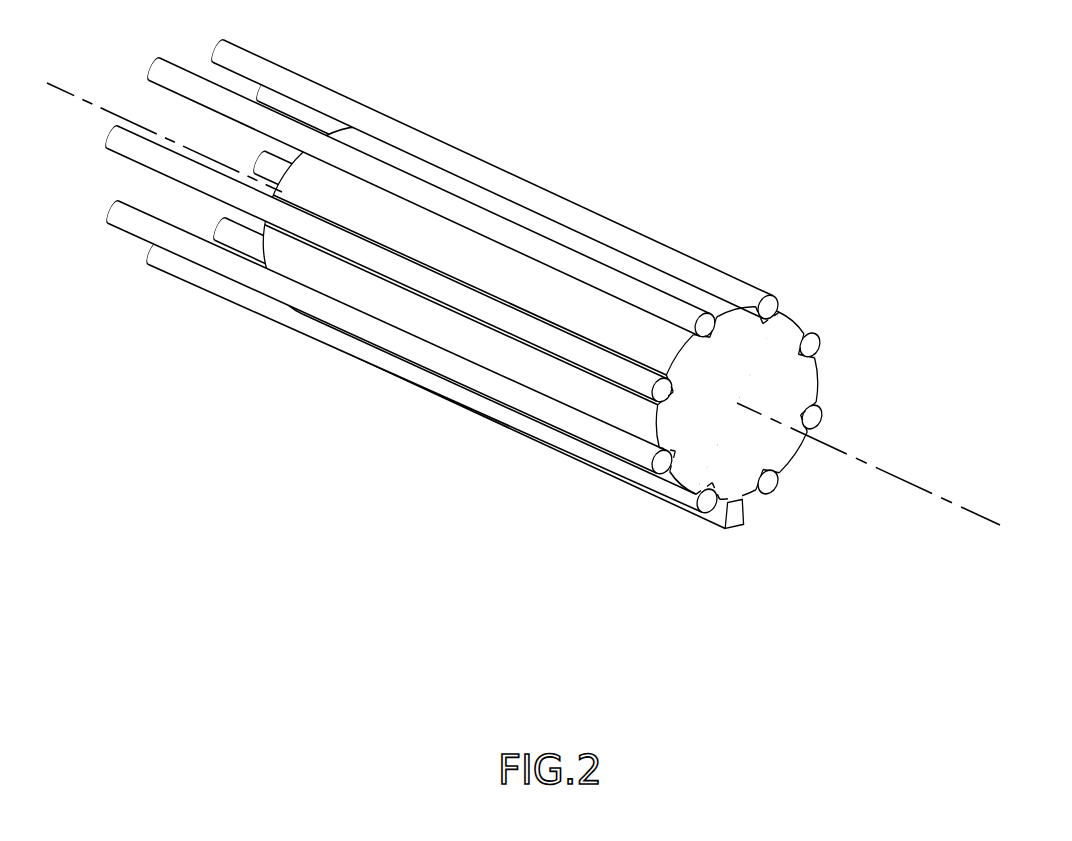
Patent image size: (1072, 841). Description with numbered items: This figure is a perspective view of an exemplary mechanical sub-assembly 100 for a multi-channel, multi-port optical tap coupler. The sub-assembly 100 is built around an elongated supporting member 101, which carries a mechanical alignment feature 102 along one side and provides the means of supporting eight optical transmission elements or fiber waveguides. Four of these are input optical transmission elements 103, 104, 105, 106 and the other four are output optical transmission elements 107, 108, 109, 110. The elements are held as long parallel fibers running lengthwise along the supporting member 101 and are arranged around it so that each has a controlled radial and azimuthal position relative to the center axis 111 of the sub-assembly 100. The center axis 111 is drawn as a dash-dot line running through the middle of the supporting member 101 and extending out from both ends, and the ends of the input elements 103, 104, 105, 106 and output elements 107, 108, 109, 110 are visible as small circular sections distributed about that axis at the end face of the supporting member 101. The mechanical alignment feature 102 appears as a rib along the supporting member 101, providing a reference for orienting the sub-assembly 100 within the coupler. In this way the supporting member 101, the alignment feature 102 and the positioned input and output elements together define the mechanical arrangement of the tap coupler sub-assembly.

The mechanical sub-assembly 100 is at (553, 329).
The supporting member 101 is at (765, 375).
The mechanical alignment feature 102 is at (531, 424).
The input optical transmission element 103 is at (655, 300).
The input optical transmission element 104 is at (592, 362).
The input optical transmission element 105 is at (663, 470).
The input optical transmission element 106 is at (708, 505).
The output optical transmission element 107 is at (778, 485).
The output optical transmission element 108 is at (810, 418).
The output optical transmission element 109 is at (813, 347).
The output optical transmission element 110 is at (776, 300).
The center axis 111 is at (933, 494).